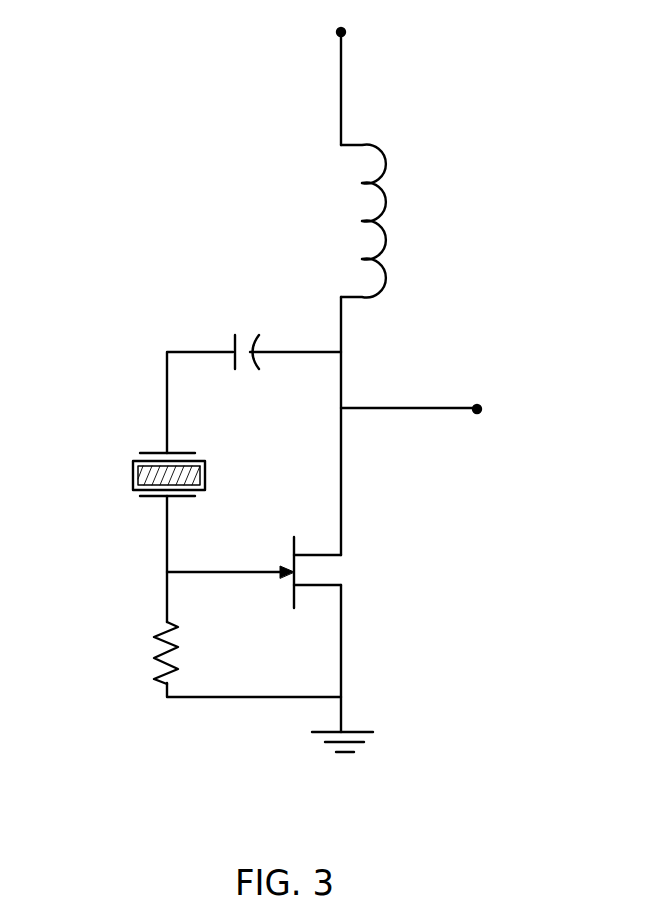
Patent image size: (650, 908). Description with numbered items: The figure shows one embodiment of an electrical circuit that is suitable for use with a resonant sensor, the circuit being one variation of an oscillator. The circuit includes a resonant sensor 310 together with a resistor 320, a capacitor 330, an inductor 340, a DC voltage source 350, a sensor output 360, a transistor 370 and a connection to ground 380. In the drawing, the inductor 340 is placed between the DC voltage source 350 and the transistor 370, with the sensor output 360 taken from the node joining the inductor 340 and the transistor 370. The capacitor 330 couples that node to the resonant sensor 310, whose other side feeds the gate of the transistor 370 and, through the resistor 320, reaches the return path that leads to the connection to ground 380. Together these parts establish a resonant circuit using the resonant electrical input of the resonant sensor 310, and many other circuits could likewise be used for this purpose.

The resonant sensor 310 is at (132, 470).
The resistor 320 is at (157, 651).
The capacitor 330 is at (241, 334).
The inductor 340 is at (383, 237).
The DC voltage source 350 is at (345, 30).
The sensor output 360 is at (477, 414).
The transistor 370 is at (312, 572).
The connection to ground 380 is at (369, 750).